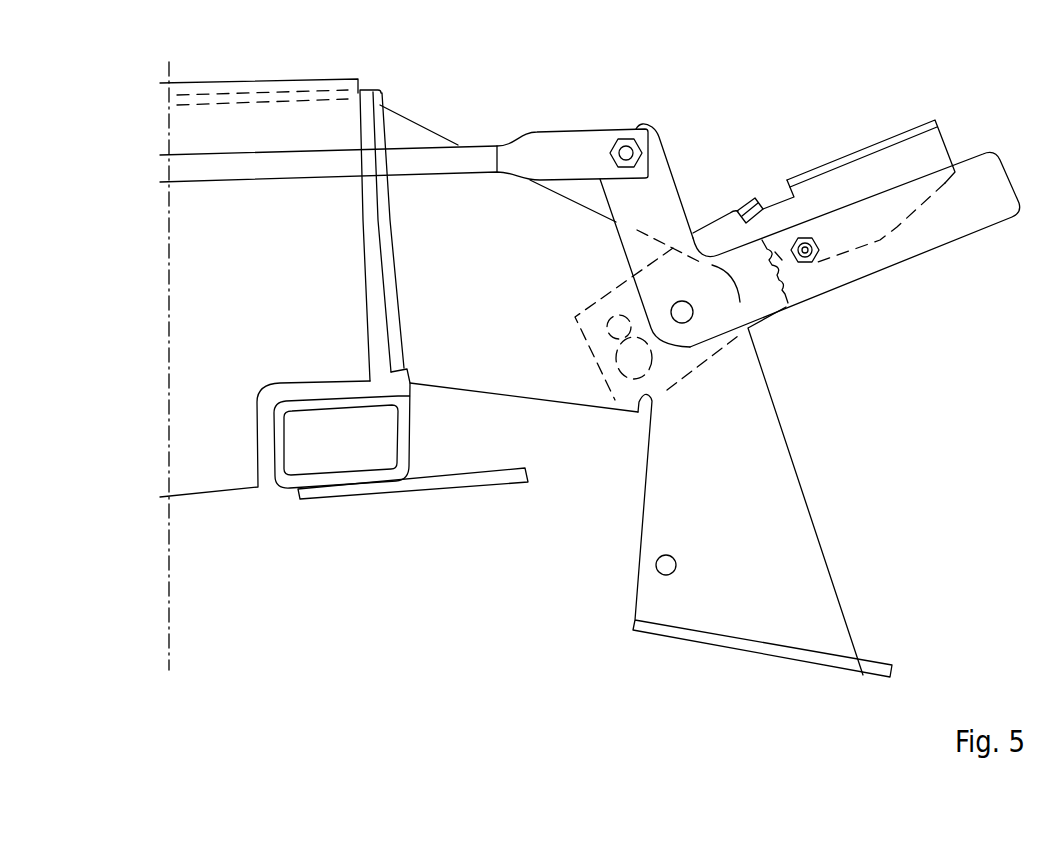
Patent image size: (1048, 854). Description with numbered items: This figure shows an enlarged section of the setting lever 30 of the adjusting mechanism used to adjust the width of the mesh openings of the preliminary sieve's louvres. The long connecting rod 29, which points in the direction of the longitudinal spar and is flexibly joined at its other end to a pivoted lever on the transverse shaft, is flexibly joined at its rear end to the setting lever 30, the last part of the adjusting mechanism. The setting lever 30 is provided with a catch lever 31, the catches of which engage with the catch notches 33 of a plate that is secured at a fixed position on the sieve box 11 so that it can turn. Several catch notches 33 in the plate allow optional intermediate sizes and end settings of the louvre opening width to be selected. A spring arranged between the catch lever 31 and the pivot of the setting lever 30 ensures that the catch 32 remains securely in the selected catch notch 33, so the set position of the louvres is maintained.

The sieve box 11 is at (308, 130).
The connecting rod 29 is at (467, 160).
The setting lever 30 is at (987, 190).
The catch lever 31 is at (895, 165).
The catch 32 is at (741, 222).
The catch notches 33 is at (762, 240).